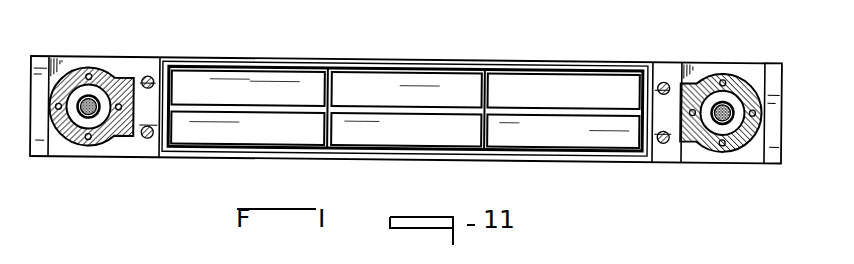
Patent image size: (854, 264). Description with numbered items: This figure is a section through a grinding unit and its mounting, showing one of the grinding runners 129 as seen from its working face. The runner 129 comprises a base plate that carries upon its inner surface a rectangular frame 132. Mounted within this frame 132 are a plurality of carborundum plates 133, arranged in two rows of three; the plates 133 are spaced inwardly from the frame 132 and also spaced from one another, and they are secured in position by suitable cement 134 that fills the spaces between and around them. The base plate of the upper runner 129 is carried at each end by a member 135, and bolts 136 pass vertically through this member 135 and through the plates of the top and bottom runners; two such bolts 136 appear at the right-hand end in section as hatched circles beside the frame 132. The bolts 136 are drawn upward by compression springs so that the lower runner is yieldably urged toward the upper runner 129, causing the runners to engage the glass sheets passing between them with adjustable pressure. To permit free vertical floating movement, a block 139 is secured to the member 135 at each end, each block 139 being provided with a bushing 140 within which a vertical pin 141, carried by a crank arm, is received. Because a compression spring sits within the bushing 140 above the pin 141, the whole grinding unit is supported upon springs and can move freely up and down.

The grinding runner 129 is at (379, 59).
The rectangular frame 132 is at (571, 65).
The carborundum plates 133 is at (374, 135).
The cement 134 is at (486, 63).
The member 135 is at (110, 63).
The bolts 136 is at (666, 82).
The block 139 is at (107, 139).
The bushing 140 is at (83, 100).
The vertical pin 141 is at (87, 113).